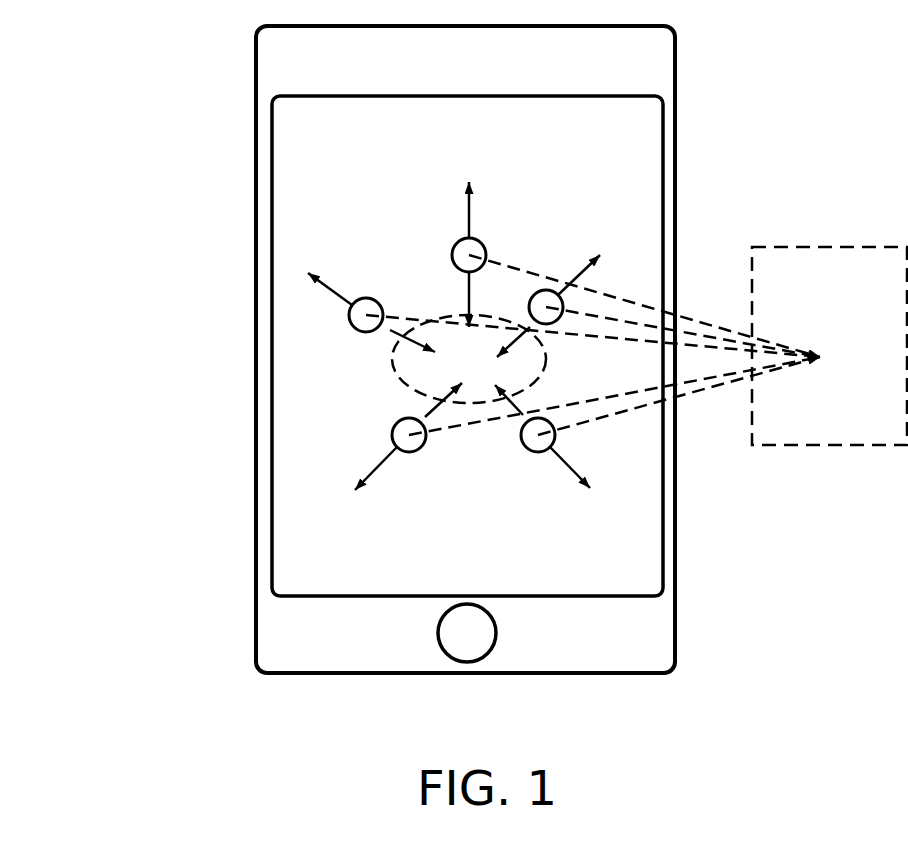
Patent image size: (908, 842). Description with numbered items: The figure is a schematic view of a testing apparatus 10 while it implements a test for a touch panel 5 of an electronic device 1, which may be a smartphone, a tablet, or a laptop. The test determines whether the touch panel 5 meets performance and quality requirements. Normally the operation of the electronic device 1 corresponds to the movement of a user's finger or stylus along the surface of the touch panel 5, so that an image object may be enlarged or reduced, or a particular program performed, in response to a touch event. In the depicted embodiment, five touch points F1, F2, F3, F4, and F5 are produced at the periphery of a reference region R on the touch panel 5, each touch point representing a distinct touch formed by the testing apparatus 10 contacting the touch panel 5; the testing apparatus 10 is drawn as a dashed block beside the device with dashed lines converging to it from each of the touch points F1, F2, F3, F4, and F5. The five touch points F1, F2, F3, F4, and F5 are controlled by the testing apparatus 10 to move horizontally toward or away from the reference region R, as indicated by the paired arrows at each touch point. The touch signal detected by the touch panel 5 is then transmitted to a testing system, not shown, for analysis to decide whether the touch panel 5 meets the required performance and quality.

The electronic device 1 is at (86, 137).
The touch panel 5 is at (282, 325).
The testing apparatus 10 is at (859, 312).
The reference region R is at (392, 368).
The touch point F1 is at (366, 298).
The touch point F2 is at (409, 452).
The touch point F3 is at (538, 452).
The touch point F4 is at (546, 290).
The touch point F5 is at (475, 238).